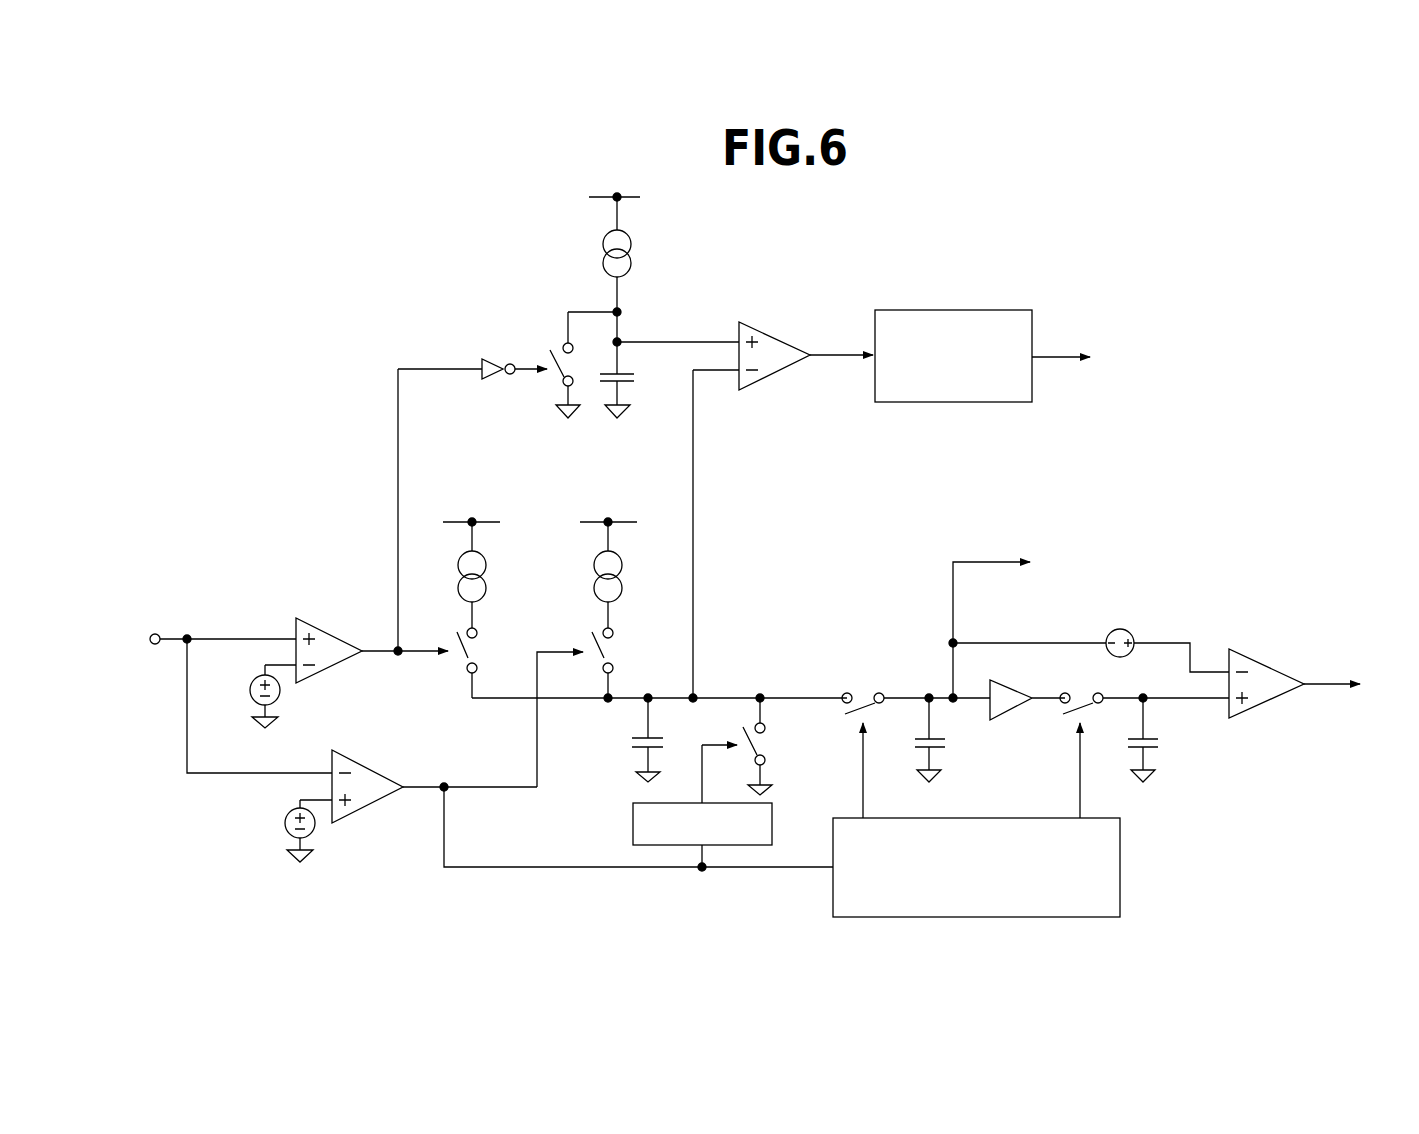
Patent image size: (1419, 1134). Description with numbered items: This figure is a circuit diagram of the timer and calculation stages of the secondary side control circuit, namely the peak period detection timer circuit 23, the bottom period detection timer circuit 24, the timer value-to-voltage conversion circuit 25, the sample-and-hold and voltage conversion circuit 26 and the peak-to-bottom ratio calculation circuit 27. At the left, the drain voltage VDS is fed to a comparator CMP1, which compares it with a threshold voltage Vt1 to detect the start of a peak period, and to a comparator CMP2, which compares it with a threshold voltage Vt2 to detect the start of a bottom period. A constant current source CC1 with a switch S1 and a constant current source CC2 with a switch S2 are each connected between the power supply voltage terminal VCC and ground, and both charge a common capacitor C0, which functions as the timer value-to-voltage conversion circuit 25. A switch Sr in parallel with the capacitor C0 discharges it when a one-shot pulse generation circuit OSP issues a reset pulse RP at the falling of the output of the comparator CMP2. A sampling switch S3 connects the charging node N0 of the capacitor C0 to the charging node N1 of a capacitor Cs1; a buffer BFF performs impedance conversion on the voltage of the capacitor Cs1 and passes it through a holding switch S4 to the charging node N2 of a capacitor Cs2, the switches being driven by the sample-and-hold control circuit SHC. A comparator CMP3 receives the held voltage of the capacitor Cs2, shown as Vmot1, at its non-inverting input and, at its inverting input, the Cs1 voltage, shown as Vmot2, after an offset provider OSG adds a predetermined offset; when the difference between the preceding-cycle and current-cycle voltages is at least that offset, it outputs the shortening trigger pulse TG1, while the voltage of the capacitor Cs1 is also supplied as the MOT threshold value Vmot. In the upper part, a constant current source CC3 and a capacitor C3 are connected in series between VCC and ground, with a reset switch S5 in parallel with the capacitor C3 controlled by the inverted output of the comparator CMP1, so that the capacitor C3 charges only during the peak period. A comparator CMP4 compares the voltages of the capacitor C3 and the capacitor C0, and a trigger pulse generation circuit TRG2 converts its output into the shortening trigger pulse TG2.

The peak period detection timer circuit 23 is at (335, 573).
The bottom period detection timer circuit 24 is at (368, 867).
The timer value-to-voltage conversion circuit 25 is at (630, 785).
The sample-and-hold and voltage conversion circuit 26 is at (1182, 538).
The peak-to-bottom ratio calculation circuit 27 is at (707, 293).
The power supply voltage terminal VCC is at (567, 361).
The constant current source CC1 is at (495, 575).
The constant current source CC2 is at (634, 575).
The constant current source CC3 is at (643, 254).
The switch S1 is at (482, 663).
The switch S2 is at (617, 663).
The sampling switch S3 is at (916, 691).
The holding switch S4 is at (1144, 691).
The reset switch S5 is at (553, 387).
The switch for resetting Sr is at (768, 744).
The capacitor C0 is at (663, 740).
The capacitor C3 is at (633, 365).
The capacitor Cs1 is at (952, 740).
The capacitor Cs2 is at (1165, 740).
The comparator CMP1 is at (335, 662).
The comparator CMP2 is at (368, 808).
The comparator CMP3 is at (1272, 698).
The comparator CMP4 is at (782, 337).
The threshold voltage Vt1 is at (257, 690).
The threshold voltage Vt2 is at (293, 824).
The drain voltage VDS is at (212, 700).
The charging node N0 is at (652, 695).
The charging node N1 is at (927, 688).
The charging node N2 is at (1145, 688).
The reset pulse RP is at (719, 774).
The one-shot pulse generation circuit OSP is at (770, 818).
The sample-and-hold control circuit SHC is at (1122, 865).
The buffer BFF is at (1012, 710).
The offset provider OSG is at (1108, 634).
The element offset is at (1116, 615).
The MOT threshold value Vmot is at (1020, 625).
The held voltage 1 Vmot1 is at (1186, 713).
The held voltage 2 Vmot2 is at (1029, 657).
The trigger pulse generation circuit TRG2 is at (987, 308).
The shortening trigger pulse TG1 is at (1355, 683).
The shortening trigger pulse TG2 is at (1085, 358).